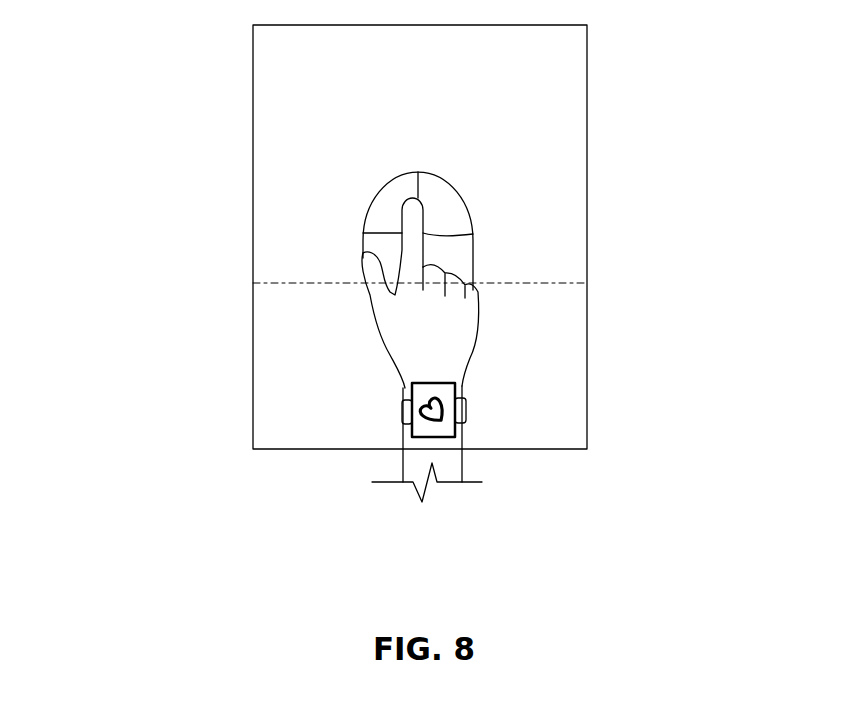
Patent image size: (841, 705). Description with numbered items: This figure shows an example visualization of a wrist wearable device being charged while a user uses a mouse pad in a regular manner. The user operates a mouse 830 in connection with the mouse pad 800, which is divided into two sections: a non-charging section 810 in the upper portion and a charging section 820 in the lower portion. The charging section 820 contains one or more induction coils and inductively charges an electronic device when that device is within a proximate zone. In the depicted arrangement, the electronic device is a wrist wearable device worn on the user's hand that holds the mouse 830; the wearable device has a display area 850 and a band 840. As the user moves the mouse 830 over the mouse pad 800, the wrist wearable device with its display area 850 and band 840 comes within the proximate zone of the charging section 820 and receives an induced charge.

The mouse pad 800 is at (253, 25).
The non-charging section 810 is at (285, 178).
The charging section 820 is at (285, 343).
The mouse 830 is at (465, 182).
The band 840 is at (403, 410).
The display area 850 is at (448, 395).